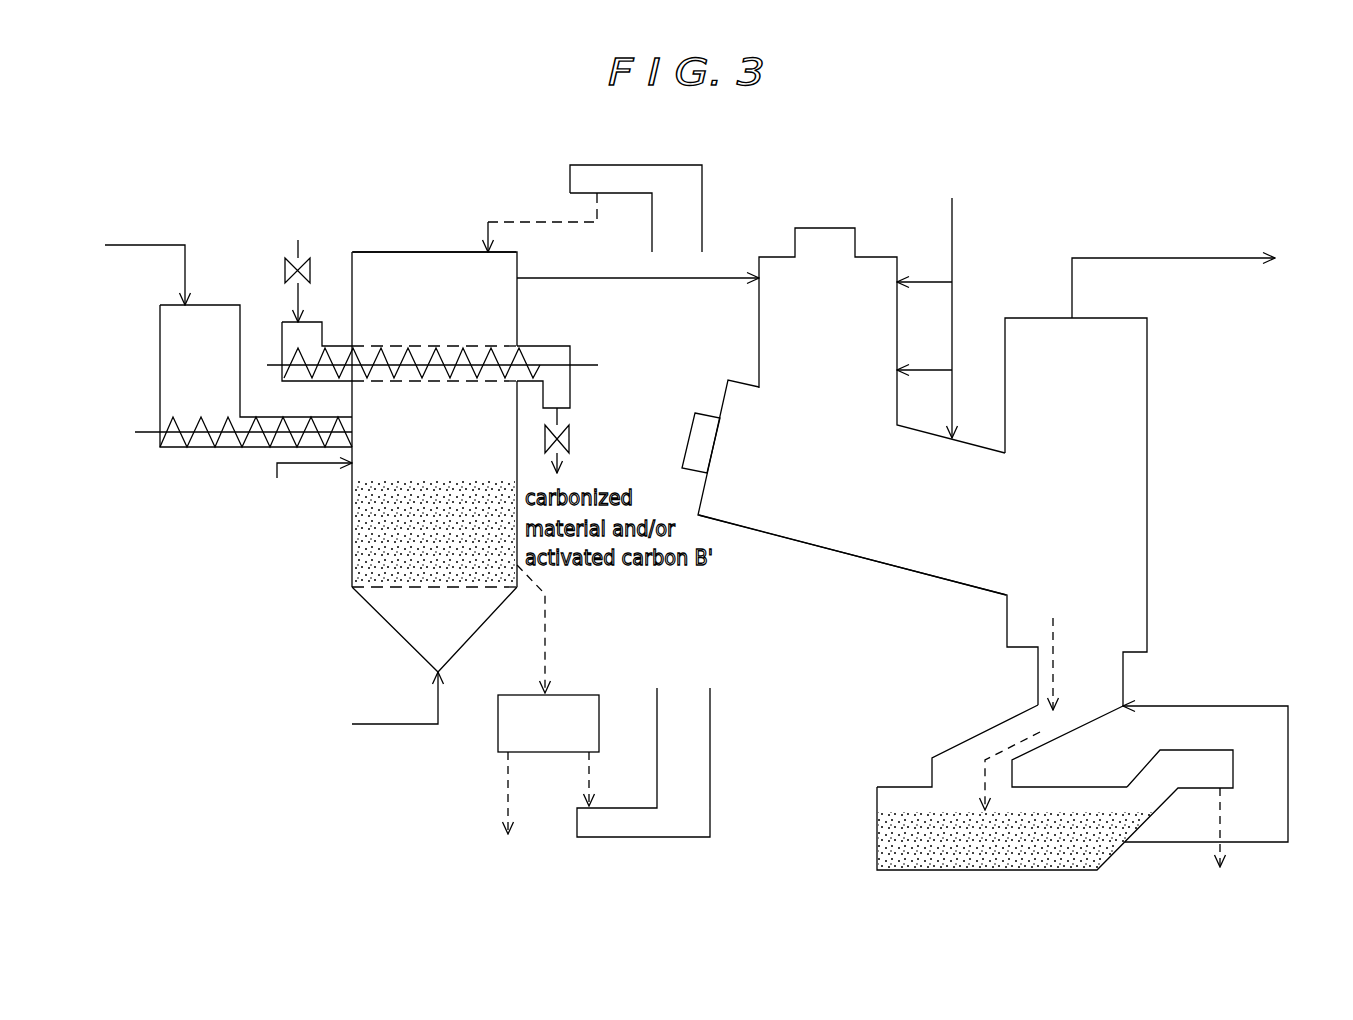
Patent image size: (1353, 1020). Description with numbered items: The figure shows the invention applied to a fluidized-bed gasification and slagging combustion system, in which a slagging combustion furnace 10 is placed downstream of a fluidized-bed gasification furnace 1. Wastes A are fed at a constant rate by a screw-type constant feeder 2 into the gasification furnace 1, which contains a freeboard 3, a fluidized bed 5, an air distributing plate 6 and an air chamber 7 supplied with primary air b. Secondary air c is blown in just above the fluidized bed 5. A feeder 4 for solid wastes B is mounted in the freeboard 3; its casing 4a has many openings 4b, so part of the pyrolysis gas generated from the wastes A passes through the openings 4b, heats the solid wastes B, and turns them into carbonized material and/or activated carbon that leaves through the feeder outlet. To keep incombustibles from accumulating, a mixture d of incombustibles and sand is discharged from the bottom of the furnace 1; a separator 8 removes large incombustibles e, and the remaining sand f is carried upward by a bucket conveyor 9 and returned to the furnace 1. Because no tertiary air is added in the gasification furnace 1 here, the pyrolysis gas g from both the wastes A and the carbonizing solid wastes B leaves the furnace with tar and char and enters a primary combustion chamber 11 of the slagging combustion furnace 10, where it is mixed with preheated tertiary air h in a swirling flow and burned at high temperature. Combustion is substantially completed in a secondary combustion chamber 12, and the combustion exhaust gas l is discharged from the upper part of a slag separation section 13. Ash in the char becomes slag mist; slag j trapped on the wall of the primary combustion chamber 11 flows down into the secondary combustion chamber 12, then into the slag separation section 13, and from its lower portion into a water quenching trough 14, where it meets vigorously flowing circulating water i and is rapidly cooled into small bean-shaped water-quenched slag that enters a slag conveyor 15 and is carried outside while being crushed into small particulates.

The fluidized-bed gasification furnace 1 is at (373, 252).
The constant feeder 2 is at (160, 357).
The freeboard 3 is at (427, 277).
The feeder 4 is at (543, 347).
The casing 4a is at (400, 346).
The openings 4b is at (393, 384).
The fluidized bed 5 is at (375, 531).
The air distributing plate 6 is at (477, 589).
The air chamber 7 is at (398, 617).
The separator 8 is at (498, 740).
The bucket conveyor 9 is at (712, 757).
The slagging combustion furnace 10 is at (815, 548).
The primary combustion chamber 11 is at (807, 342).
The secondary combustion chamber 12 is at (930, 525).
The slag separation section 13 is at (1107, 475).
The water quenching trough 14 is at (965, 735).
The slag conveyor 15 is at (877, 830).
The wastes A is at (131, 268).
The solid wastes B is at (297, 265).
The primary air b is at (383, 705).
The secondary air c is at (311, 486).
The mixture of incombustibles and sand d is at (543, 629).
The incombustibles e is at (508, 809).
The sand f is at (546, 498).
The pyrolysis gas g is at (638, 261).
The tertiary air h is at (927, 300).
The circulating water i is at (1214, 774).
The slag j is at (1096, 760).
The combustion exhaust gas l is at (1184, 283).